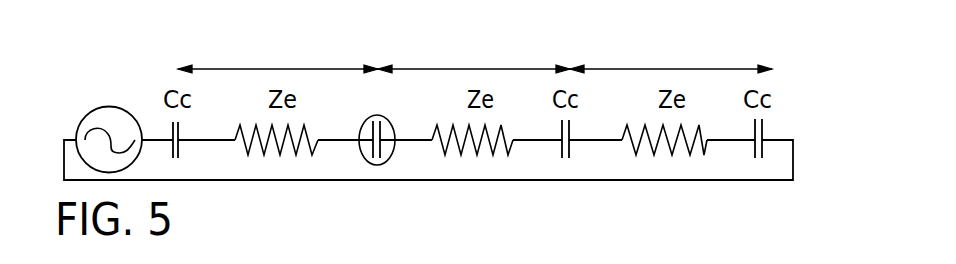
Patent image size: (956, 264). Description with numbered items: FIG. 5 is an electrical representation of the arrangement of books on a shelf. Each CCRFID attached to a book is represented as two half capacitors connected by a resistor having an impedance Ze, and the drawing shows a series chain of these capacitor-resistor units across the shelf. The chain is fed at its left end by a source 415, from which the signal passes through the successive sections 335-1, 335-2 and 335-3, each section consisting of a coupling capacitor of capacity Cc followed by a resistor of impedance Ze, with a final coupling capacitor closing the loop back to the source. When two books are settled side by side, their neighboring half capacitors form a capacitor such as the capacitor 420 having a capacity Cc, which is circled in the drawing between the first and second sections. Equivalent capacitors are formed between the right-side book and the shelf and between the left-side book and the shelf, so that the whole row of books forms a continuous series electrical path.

The AC signal source 415 is at (110, 107).
The capacitor 420 is at (362, 153).
The first circuit section 335-1 is at (278, 57).
The second circuit section 335-2 is at (474, 56).
The third circuit section 335-3 is at (671, 56).